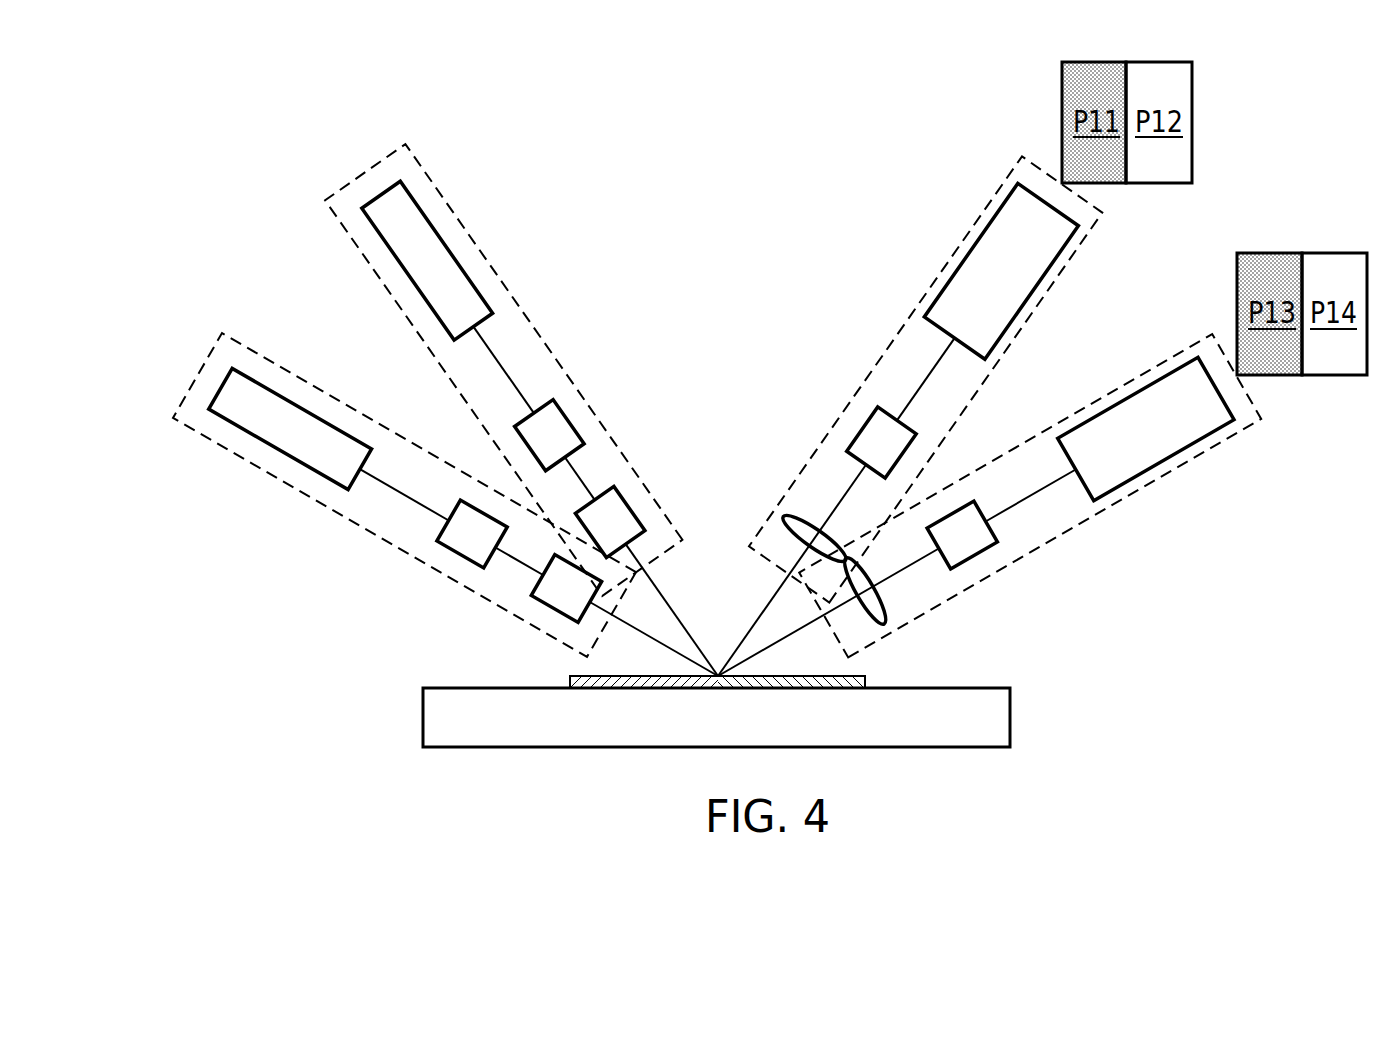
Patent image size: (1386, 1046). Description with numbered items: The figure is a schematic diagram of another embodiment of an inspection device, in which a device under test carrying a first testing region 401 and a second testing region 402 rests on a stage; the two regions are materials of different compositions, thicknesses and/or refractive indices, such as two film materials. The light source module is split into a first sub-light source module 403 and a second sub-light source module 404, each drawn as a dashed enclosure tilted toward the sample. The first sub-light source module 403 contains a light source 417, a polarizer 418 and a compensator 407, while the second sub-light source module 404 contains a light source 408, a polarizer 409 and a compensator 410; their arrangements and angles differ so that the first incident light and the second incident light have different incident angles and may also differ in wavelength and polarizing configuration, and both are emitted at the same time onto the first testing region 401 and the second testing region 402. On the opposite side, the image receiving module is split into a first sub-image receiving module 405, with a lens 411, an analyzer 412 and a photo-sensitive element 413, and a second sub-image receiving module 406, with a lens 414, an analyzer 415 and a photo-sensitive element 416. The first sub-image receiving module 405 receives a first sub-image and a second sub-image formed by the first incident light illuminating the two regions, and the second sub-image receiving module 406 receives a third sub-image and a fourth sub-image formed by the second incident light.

The first testing region 401 is at (630, 689).
The second testing region 402 is at (793, 689).
The first sub-light source module 403 is at (435, 497).
The second sub-light source module 404 is at (526, 391).
The first sub-image receiving module 405 is at (910, 416).
The second sub-image receiving module 406 is at (989, 509).
The compensator 407 is at (555, 613).
The light source 408 is at (448, 247).
The polarizer 409 is at (570, 415).
The compensator 410 is at (632, 507).
The lens 411 is at (797, 517).
The analyzer 412 is at (853, 430).
The photo-sensitive element 413 is at (972, 245).
The lens 414 is at (893, 623).
The analyzer 415 is at (975, 555).
The photo-sensitive element 416 is at (1165, 463).
The light source 417 is at (277, 450).
The polarizer 418 is at (462, 558).